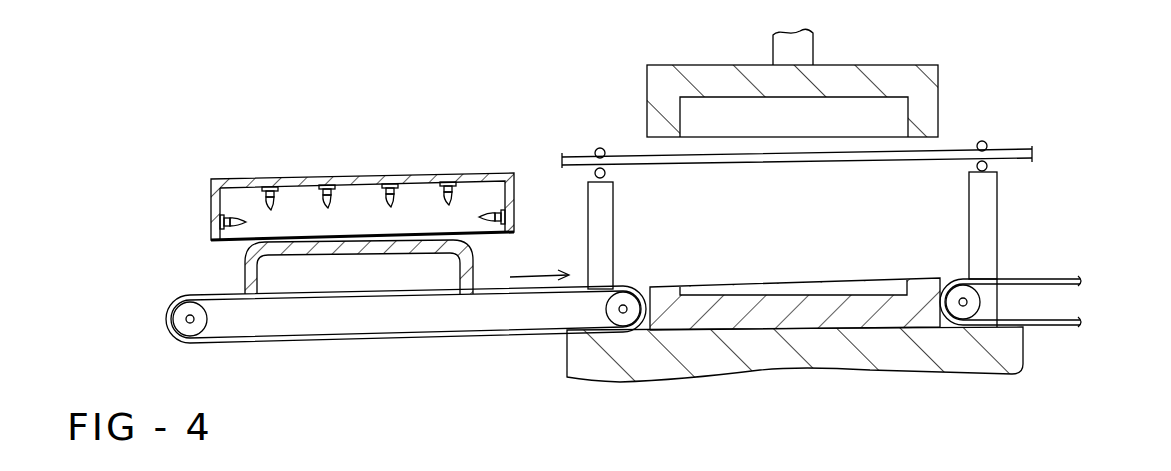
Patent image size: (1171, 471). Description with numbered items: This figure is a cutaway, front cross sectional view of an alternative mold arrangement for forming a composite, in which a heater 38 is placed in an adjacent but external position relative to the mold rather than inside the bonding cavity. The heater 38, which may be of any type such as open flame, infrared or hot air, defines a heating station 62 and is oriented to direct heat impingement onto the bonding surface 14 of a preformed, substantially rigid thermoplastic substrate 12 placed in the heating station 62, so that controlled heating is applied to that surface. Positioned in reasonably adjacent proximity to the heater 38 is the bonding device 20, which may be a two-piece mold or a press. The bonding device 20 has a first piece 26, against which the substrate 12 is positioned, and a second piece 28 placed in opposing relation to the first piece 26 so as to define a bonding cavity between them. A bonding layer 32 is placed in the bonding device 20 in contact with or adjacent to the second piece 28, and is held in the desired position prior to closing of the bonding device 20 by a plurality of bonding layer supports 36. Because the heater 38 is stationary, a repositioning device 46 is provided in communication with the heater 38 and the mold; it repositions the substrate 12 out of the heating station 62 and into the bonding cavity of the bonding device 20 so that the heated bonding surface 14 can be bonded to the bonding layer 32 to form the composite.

The heating station 62 is at (245, 172).
The heater 38 is at (282, 180).
The thermoplastic substrate 12 is at (453, 240).
The second piece 28 is at (647, 100).
The bonding layer 32 is at (950, 150).
The bonding layer supports 36 is at (997, 193).
The bonding device 20 is at (1057, 227).
The bonding surface 14 is at (473, 253).
The first piece 26 is at (940, 278).
The repositioning device 46 is at (380, 343).